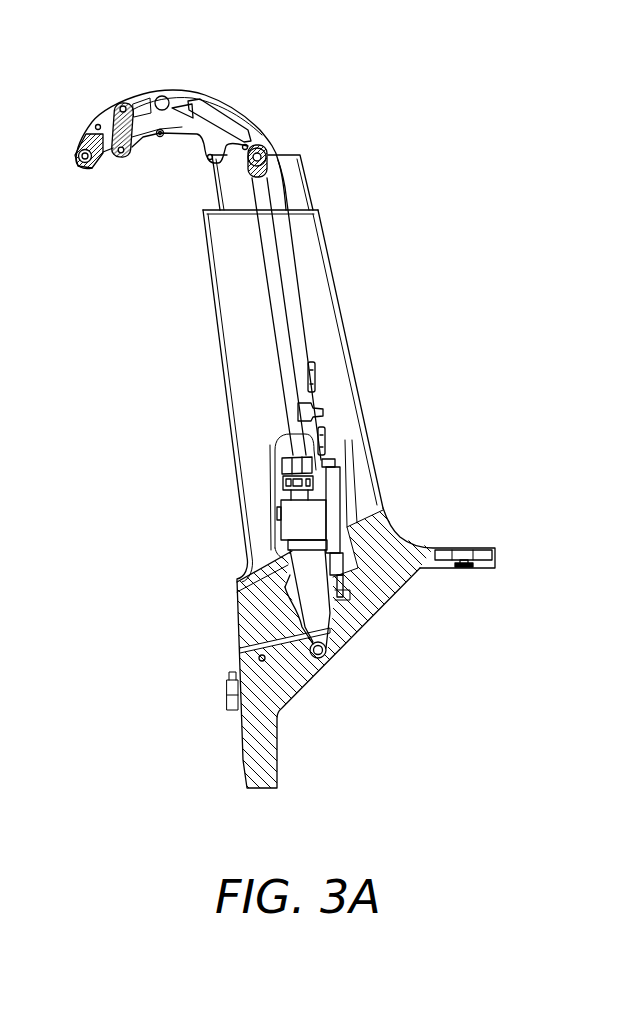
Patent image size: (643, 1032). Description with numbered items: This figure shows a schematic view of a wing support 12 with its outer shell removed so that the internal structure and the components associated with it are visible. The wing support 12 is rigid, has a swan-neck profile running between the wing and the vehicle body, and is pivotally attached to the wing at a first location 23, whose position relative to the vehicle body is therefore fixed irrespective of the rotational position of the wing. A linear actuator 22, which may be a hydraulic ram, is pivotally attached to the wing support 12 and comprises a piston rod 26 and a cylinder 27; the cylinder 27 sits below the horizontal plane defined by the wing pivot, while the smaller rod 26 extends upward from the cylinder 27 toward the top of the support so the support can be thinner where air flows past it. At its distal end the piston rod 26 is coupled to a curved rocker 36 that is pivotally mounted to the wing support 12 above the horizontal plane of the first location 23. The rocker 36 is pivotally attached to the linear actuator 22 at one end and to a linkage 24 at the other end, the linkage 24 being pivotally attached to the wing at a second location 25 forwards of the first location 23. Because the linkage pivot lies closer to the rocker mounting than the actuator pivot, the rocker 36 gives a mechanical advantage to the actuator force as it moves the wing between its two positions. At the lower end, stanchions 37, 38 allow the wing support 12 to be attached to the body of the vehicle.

The wing support 12 is at (345, 209).
The linear actuator 22 is at (267, 516).
The first location 23 is at (75, 164).
The linkage 24 is at (113, 125).
The second location 25 is at (125, 154).
The piston rod 26 is at (281, 337).
The cylinder 27 is at (323, 617).
The rocker 36 is at (175, 96).
The stanchion 37 is at (497, 565).
The stanchion 38 is at (262, 780).